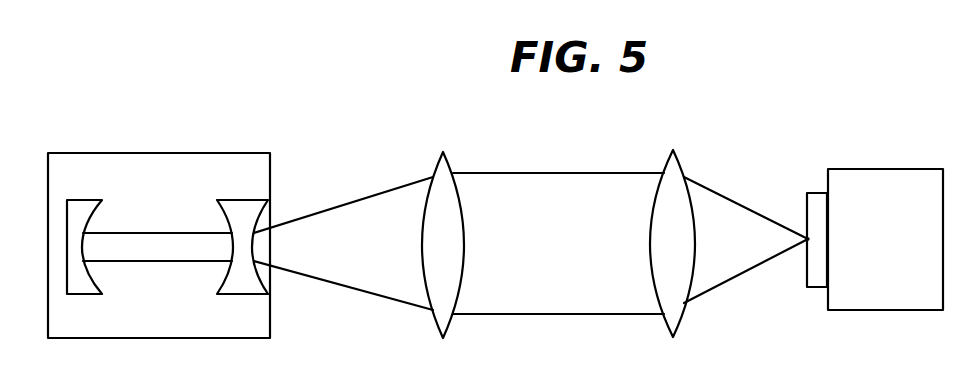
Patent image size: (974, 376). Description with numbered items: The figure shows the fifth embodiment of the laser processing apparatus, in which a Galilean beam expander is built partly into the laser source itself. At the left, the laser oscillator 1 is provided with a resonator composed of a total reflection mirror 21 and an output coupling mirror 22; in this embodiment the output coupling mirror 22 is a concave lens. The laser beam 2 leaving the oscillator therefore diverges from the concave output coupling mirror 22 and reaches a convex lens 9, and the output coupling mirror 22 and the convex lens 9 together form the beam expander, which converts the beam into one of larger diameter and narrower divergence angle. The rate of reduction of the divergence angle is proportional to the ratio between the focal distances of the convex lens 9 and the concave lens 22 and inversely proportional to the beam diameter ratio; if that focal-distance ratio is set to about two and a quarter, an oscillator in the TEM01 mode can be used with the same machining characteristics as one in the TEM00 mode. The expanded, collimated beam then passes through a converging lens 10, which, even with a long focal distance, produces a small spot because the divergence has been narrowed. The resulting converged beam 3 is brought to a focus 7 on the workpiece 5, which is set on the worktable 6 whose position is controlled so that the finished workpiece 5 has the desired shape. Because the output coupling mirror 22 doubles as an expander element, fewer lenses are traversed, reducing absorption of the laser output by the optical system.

The laser oscillator 1 is at (173, 153).
The total reflection mirror 21 is at (93, 200).
The output coupling mirror 22 is at (252, 200).
The laser beam 2 is at (340, 205).
The convex lens 9 is at (443, 152).
The converging lens 10 is at (673, 150).
The converged beam 3 is at (733, 202).
The focus 7 is at (806, 240).
The workpiece 5 is at (810, 193).
The worktable 6 is at (887, 169).